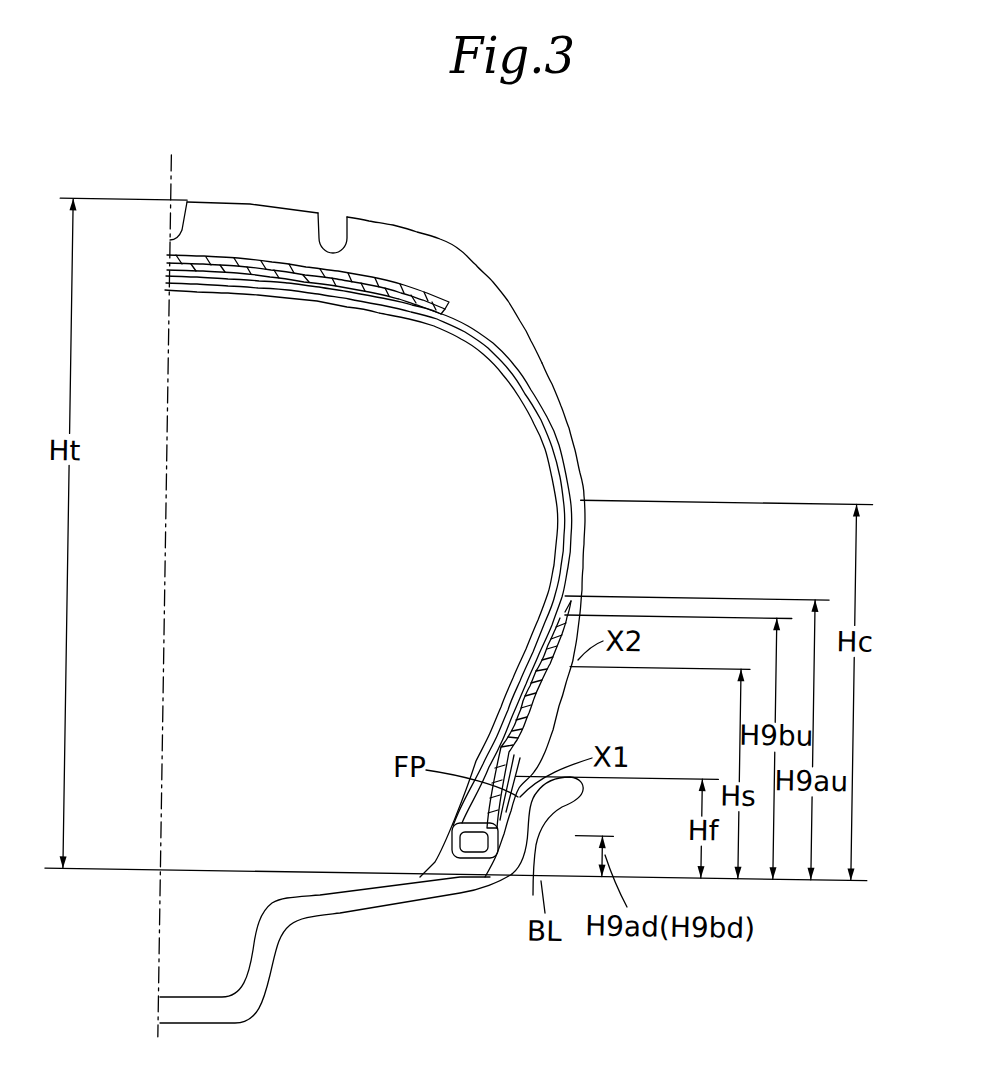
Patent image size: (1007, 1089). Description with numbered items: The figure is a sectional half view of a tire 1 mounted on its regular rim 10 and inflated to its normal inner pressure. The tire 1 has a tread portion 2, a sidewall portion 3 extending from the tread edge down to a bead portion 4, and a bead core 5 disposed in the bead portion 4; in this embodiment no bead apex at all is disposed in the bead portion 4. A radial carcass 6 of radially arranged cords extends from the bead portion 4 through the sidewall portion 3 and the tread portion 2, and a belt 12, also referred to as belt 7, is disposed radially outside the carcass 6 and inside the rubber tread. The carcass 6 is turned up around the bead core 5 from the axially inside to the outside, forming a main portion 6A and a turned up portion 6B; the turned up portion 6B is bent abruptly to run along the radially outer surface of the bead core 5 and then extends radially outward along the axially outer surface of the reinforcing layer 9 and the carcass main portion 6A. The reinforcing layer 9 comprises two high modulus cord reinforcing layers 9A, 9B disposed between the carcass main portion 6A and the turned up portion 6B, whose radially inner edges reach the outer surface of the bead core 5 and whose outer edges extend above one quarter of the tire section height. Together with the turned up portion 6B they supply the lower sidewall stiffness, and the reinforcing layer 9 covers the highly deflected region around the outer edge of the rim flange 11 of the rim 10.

The tire 1 is at (662, 381).
The tread portion 2 is at (281, 185).
The sidewall portion 3 is at (585, 402).
The bead portion 4 is at (428, 798).
The bead core 5 is at (476, 849).
The radial carcass 6 is at (363, 468).
The carcass main portion 6A is at (507, 394).
The carcass turned up portion 6B is at (564, 510).
The belt layer 7 is at (308, 284).
The reinforcing layer 9 is at (350, 665).
The reinforcing layer 9A is at (545, 650).
The reinforcing layer 9B is at (525, 689).
The regular rim 10 is at (292, 976).
The rim flange 11 is at (520, 863).
The belt 12 is at (407, 270).